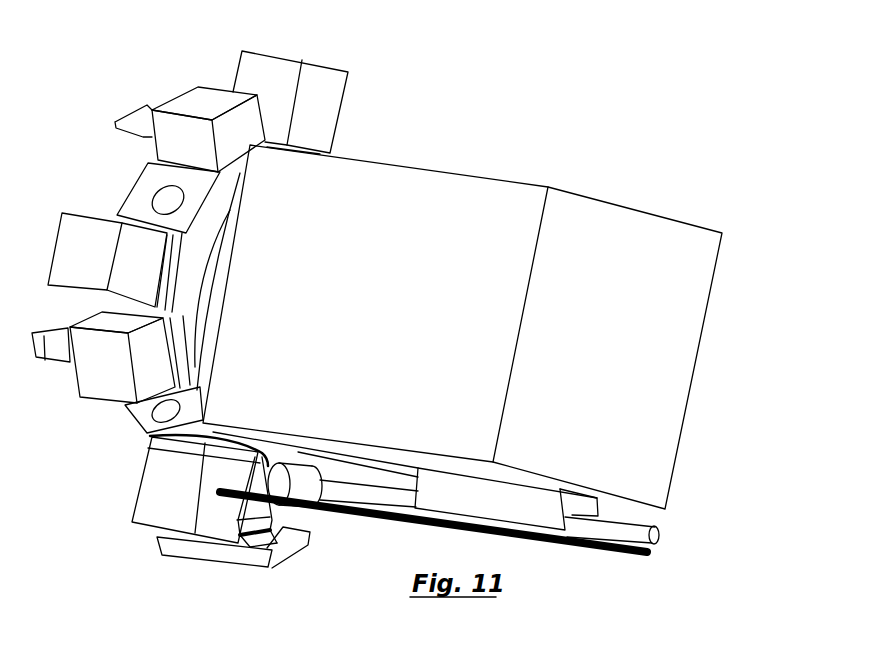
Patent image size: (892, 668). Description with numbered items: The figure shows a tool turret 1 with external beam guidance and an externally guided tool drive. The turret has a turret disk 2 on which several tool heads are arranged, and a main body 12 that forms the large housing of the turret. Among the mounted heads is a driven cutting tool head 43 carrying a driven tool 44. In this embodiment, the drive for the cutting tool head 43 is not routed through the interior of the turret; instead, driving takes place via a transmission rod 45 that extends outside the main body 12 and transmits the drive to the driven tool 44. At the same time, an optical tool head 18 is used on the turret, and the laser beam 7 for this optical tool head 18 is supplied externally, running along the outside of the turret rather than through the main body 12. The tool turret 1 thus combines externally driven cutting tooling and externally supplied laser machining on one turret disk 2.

The tool turret 1 is at (455, 108).
The turret disk 2 is at (212, 220).
The laser beam 7 is at (577, 550).
The main body 12 is at (682, 258).
The optical tool head 18 is at (155, 497).
The driven cutting tool head 43 is at (150, 438).
The driven tool 44 is at (286, 524).
The transmission rod 45 is at (665, 528).